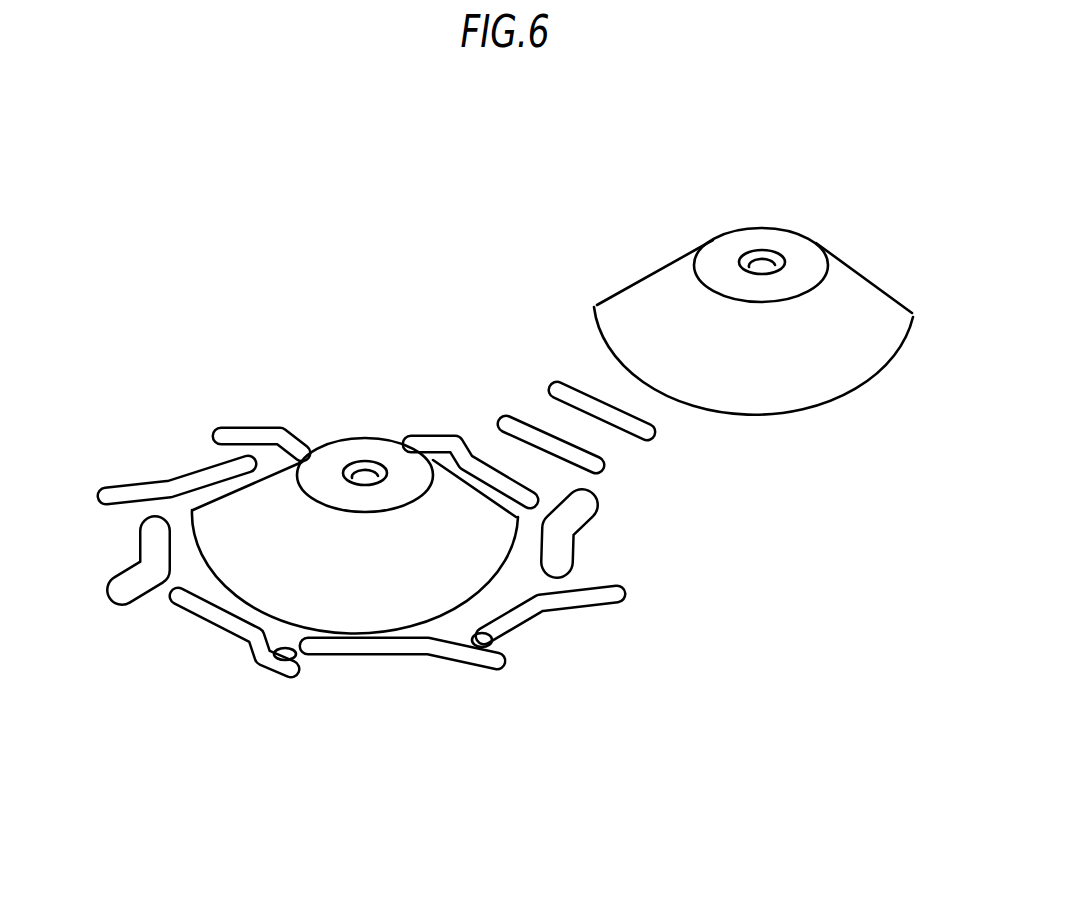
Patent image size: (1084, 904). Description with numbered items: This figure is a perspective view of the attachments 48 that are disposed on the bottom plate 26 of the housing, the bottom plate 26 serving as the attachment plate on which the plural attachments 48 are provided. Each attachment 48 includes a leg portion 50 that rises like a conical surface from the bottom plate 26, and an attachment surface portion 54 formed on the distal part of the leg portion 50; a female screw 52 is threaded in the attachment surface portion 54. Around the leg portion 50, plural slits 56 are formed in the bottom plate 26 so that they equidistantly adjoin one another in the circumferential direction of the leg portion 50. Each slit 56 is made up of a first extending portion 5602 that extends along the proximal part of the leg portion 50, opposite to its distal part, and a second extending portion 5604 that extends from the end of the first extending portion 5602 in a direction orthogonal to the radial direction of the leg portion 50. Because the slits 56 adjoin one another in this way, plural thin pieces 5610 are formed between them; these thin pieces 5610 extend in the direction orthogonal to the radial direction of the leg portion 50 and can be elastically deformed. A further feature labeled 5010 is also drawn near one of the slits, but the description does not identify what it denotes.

The bottom plate 26 is at (893, 620).
The attachment 48 is at (499, 435).
The leg portion 50 is at (258, 500).
The female screw 52 is at (380, 460).
The attachment surface portion 54 is at (332, 457).
The slit 56 is at (410, 590).
The projection 5010 is at (262, 660).
The first extending portion 5602 is at (495, 683).
The second extending portion 5604 is at (425, 663).
The thin piece 5610 is at (500, 645).